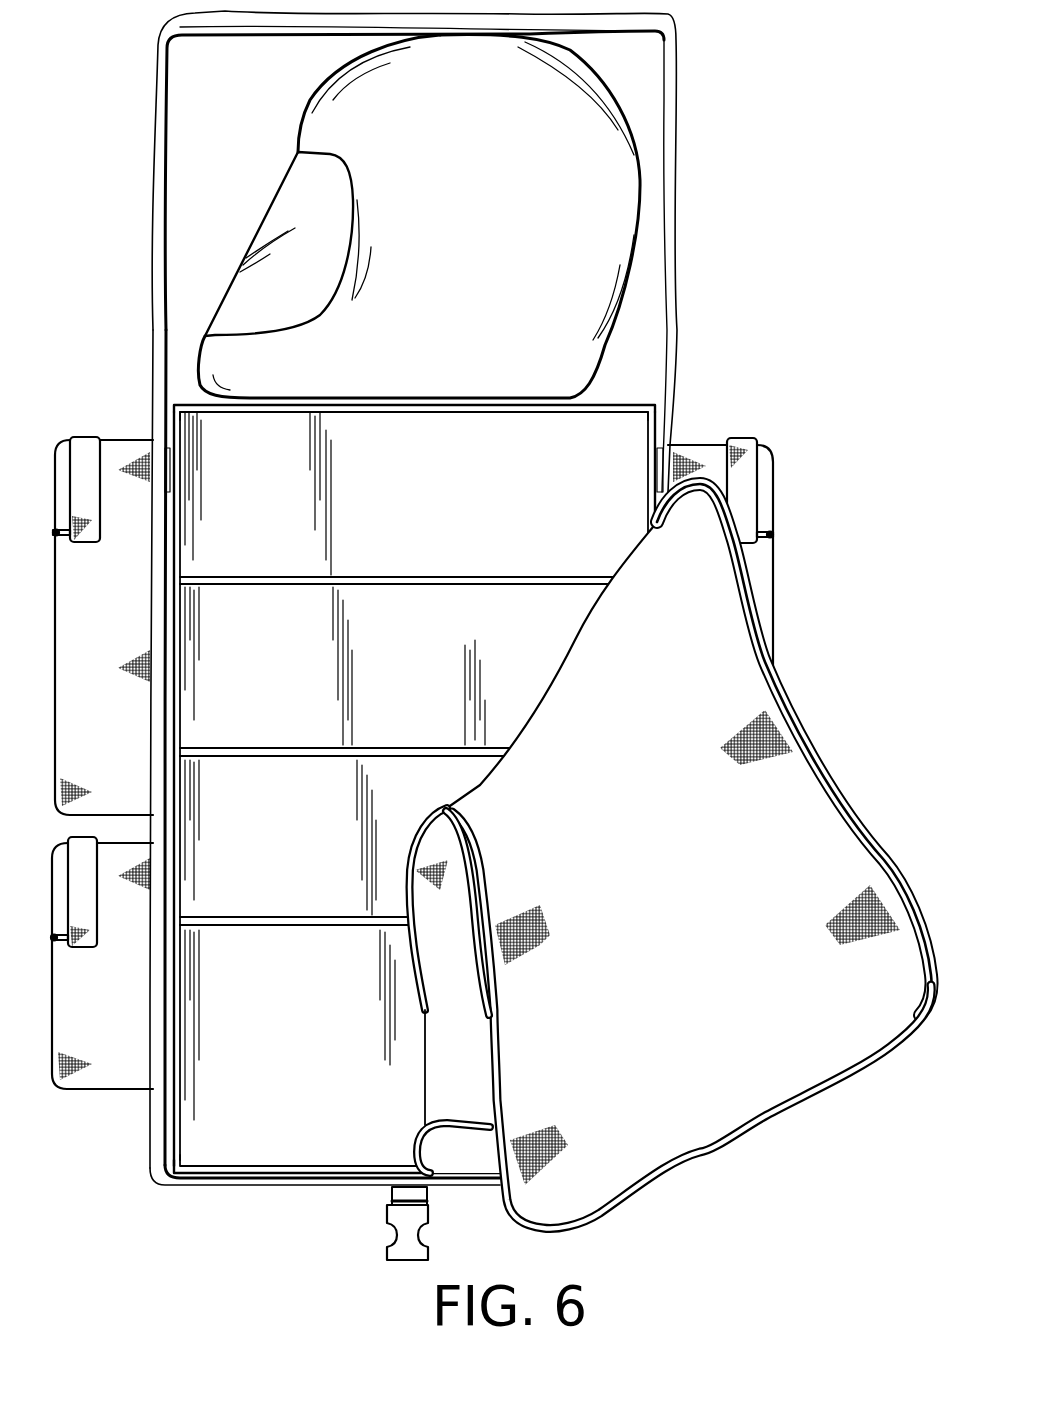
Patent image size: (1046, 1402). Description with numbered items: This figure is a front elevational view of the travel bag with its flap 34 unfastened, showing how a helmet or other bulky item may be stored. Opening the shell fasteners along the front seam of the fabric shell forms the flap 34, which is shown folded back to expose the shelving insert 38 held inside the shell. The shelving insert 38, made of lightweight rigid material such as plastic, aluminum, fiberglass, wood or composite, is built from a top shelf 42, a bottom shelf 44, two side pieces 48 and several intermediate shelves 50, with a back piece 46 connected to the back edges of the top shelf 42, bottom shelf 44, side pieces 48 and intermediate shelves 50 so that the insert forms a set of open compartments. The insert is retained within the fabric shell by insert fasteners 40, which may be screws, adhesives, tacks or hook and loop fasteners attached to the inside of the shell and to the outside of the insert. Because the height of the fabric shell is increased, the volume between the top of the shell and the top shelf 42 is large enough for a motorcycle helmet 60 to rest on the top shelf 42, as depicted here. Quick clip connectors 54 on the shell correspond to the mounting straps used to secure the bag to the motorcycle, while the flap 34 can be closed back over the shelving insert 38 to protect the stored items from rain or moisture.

The flap 34 is at (723, 1105).
The shelving insert 38 is at (634, 388).
The insert fasteners 40 is at (161, 443).
The top shelf 42 is at (188, 402).
The bottom shelf 44 is at (222, 1178).
The back piece 46 is at (298, 1063).
The side pieces 48 is at (645, 518).
The intermediate shelves 50 is at (432, 576).
The quick clip connectors 54 is at (428, 1213).
The motorcycle helmet 60 is at (627, 190).